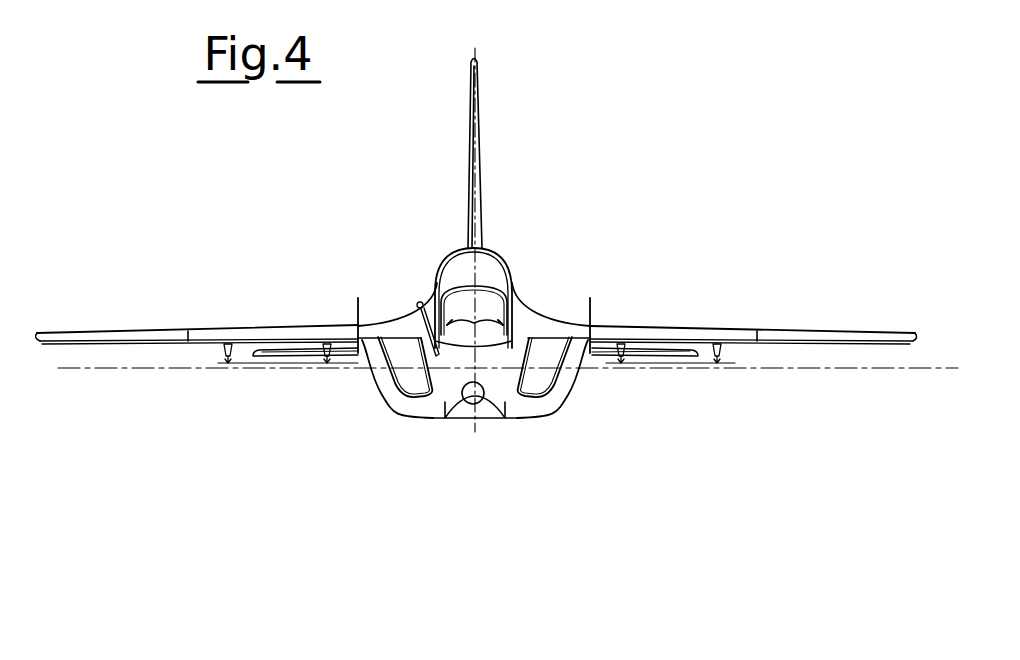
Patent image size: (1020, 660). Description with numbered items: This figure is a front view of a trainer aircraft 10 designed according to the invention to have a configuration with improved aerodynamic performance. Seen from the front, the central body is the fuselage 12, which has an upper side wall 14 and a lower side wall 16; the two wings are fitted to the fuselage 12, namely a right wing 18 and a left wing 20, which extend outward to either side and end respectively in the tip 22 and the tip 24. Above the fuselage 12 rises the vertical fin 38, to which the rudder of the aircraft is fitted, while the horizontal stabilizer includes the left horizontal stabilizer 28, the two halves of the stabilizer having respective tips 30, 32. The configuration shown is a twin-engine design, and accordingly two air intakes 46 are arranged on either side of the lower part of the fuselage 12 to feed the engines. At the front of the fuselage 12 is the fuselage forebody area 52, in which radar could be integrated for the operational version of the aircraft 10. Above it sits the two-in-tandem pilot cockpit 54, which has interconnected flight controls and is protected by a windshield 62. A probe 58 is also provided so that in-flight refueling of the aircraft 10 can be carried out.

The aircraft 10 is at (606, 190).
The fuselage 12 is at (546, 319).
The upper side wall 14 is at (531, 292).
The lower side wall 16 is at (492, 403).
The right wing 18 is at (208, 329).
The left wing 20 is at (737, 327).
The tip 22 is at (37, 333).
The tip 24 is at (915, 333).
The left horizontal stabilizer 28 is at (655, 356).
The tip 30 is at (254, 356).
The tip 32 is at (694, 356).
The vertical fin 38 is at (479, 71).
The air intakes 46 is at (412, 383).
The fuselage forebody area 52 is at (473, 398).
The pilot cockpit 54 is at (460, 275).
The probe 58 is at (417, 305).
The windshield 62 is at (455, 308).